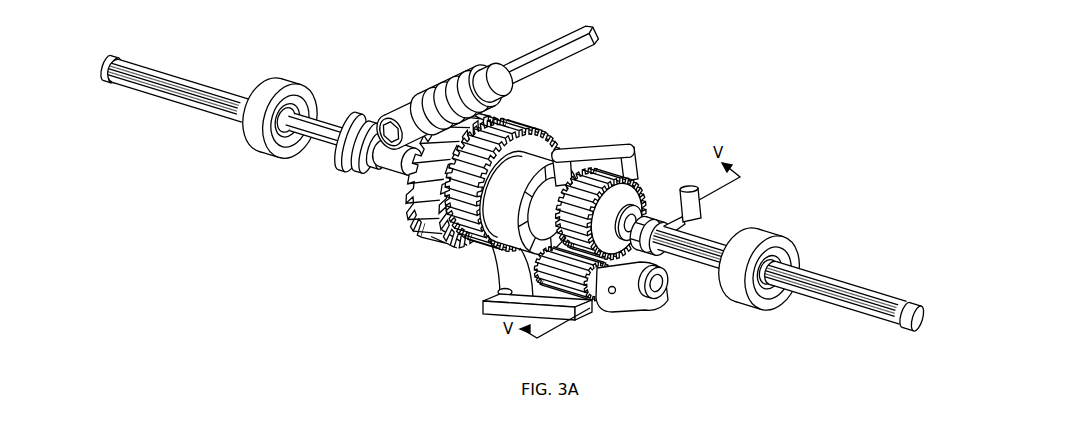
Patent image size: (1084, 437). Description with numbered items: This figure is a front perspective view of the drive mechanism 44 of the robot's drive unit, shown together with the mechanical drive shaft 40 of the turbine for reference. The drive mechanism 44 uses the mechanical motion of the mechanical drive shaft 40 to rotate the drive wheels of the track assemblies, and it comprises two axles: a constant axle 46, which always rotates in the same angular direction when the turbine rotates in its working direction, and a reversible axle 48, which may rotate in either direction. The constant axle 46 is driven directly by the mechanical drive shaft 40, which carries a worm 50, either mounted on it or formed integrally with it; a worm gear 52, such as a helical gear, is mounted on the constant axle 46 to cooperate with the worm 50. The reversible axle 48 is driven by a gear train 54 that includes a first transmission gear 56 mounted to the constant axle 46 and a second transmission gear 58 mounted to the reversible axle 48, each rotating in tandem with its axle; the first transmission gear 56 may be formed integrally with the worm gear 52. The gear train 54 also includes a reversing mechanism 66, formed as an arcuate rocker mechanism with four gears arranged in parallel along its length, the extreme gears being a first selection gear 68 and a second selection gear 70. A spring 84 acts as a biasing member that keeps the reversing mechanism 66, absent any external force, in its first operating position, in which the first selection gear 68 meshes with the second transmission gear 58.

The mechanical drive shaft 40 is at (534, 52).
The drive mechanism 44 is at (741, 124).
The constant axle 46 is at (232, 88).
The reversible axle 48 is at (810, 272).
The worm 50 is at (421, 95).
The worm gear 52 is at (430, 233).
The gear train 54 is at (479, 277).
The first transmission gear 56 is at (529, 148).
The second transmission gear 58 is at (636, 177).
The reversing mechanism 66 is at (620, 302).
The first selection gear 68 is at (667, 190).
The second selection gear 70 is at (493, 307).
The spring 84 is at (600, 148).